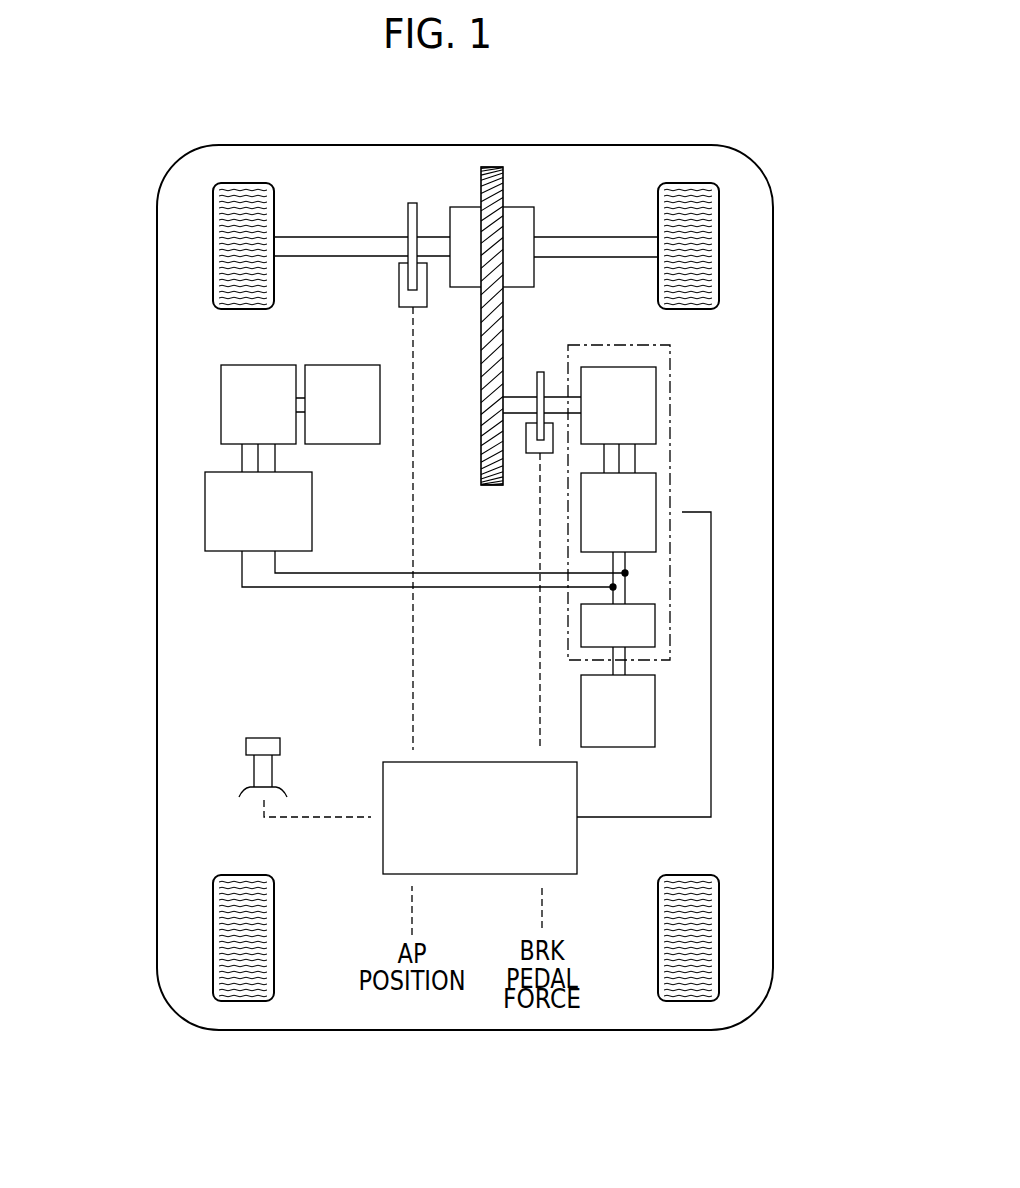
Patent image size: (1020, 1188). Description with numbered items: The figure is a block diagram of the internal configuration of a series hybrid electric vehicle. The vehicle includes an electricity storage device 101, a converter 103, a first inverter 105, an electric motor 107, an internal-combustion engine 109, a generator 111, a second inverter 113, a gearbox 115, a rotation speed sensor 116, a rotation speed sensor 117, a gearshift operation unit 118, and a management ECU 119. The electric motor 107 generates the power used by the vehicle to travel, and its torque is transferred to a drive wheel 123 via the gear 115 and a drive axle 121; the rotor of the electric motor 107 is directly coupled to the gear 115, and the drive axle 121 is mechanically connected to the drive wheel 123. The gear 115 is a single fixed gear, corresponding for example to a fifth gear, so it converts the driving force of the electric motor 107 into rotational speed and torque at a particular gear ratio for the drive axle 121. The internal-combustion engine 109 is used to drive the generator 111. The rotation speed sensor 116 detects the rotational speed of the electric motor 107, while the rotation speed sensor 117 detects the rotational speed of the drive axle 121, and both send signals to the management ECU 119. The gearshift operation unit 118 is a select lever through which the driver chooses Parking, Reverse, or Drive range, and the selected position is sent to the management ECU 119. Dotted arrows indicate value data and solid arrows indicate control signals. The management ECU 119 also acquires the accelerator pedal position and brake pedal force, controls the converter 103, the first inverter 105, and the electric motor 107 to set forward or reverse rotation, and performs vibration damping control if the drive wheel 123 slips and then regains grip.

The electricity storage device 101 is at (655, 710).
The converter 103 is at (655, 625).
The first inverter 105 is at (656, 487).
The electric motor 107 is at (656, 402).
The internal-combustion engine 109 is at (355, 444).
The generator 111 is at (221, 402).
The second inverter 113 is at (205, 488).
The gearbox 115 is at (528, 226).
The rotation speed sensor 116 is at (530, 453).
The rotation speed sensor 117 is at (399, 293).
The gearshift operation unit 118 is at (263, 740).
The management ECU 119 is at (484, 762).
The drive axle 121 is at (318, 237).
The drive wheel 123 is at (213, 239).